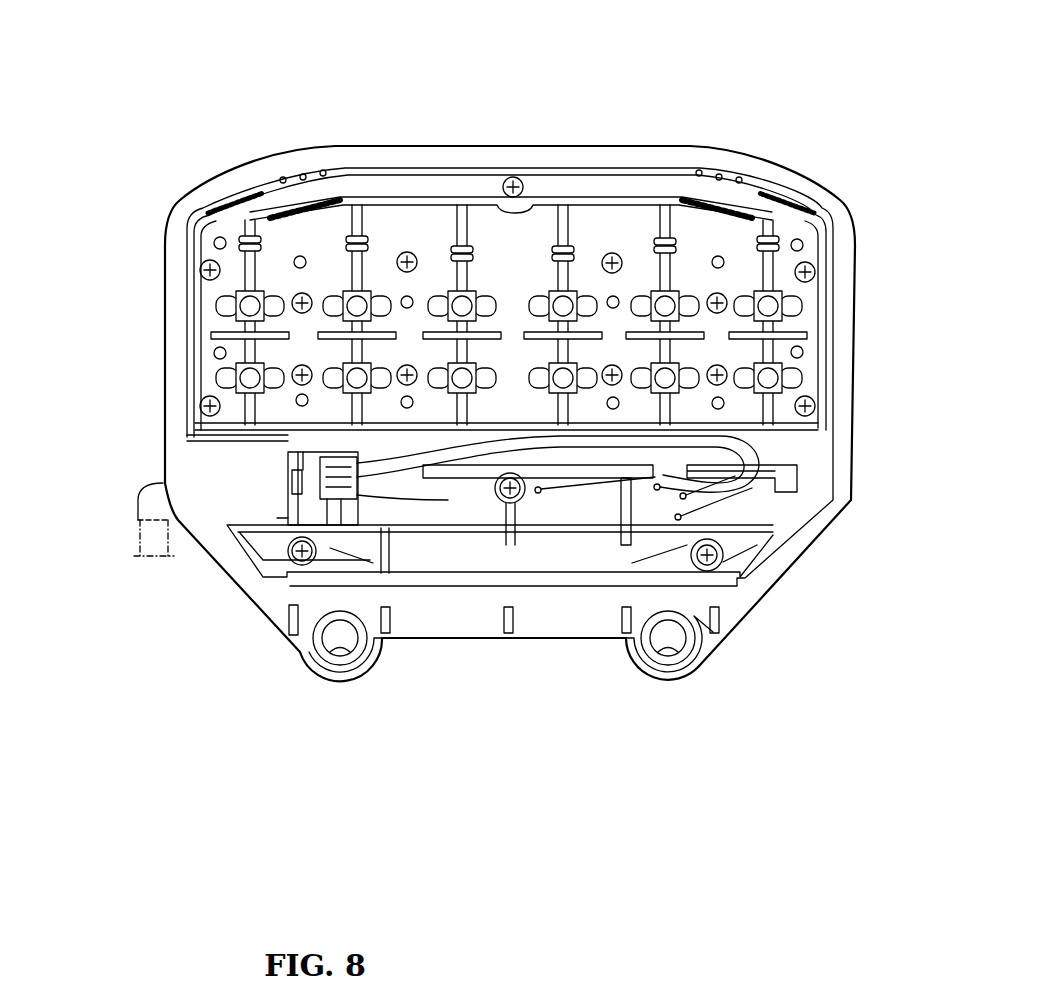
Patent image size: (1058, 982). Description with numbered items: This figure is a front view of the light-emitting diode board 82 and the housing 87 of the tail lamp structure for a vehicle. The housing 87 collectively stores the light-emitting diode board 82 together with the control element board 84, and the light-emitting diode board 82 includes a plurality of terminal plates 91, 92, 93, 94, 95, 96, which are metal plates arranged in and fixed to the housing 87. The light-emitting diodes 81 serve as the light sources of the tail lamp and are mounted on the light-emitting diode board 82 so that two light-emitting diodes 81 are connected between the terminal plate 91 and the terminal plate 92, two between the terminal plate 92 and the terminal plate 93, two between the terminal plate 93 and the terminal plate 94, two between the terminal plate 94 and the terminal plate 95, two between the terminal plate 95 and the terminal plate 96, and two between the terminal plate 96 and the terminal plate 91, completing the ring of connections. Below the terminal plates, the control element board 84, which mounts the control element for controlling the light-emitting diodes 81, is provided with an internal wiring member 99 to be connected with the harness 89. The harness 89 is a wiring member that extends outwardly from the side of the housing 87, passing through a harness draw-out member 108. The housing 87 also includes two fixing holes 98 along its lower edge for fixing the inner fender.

The light-emitting diode 81 is at (797, 310).
The light-emitting diode board 82 is at (294, 147).
The control element board 84 is at (340, 520).
The housing 87 is at (797, 153).
The harness 89 is at (137, 540).
The terminal plate 91 is at (263, 195).
The terminal plate 92 is at (333, 223).
The terminal plate 93 is at (405, 222).
The terminal plate 94 is at (535, 226).
The terminal plate 95 is at (628, 224).
The terminal plate 96 is at (714, 230).
The fixing hole 98 is at (333, 655).
The internal wiring member 99 is at (353, 543).
The harness draw-out member 108 is at (132, 483).